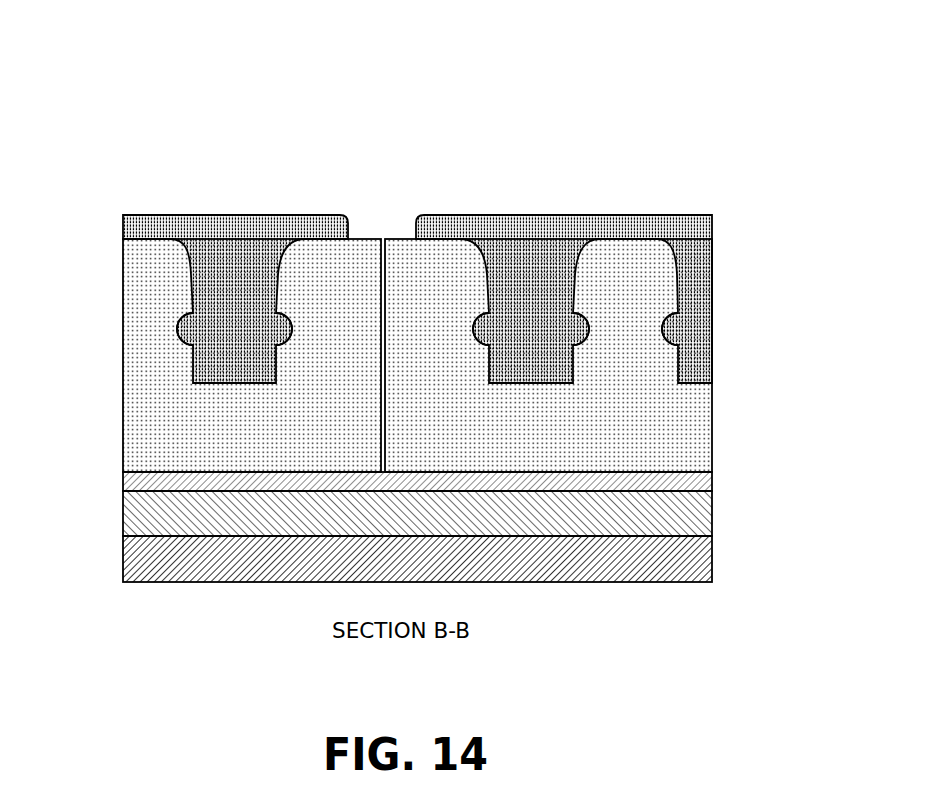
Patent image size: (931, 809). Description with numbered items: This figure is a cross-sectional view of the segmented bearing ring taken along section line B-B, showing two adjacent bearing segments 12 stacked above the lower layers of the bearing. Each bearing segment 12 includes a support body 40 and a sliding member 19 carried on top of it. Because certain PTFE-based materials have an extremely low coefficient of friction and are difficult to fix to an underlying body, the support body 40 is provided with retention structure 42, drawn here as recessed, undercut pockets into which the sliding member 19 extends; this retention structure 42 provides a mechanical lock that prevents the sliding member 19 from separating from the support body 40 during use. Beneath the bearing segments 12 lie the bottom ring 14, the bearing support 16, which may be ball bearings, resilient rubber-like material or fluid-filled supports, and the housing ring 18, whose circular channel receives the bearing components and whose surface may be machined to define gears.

The bearing segment 12 is at (278, 118).
The bottom ring 14 is at (695, 479).
The bearing support 16 is at (695, 518).
The housing ring 18 is at (695, 556).
The sliding member 19 is at (238, 243).
The support body 40 is at (368, 252).
The retention structure 42 is at (176, 331).